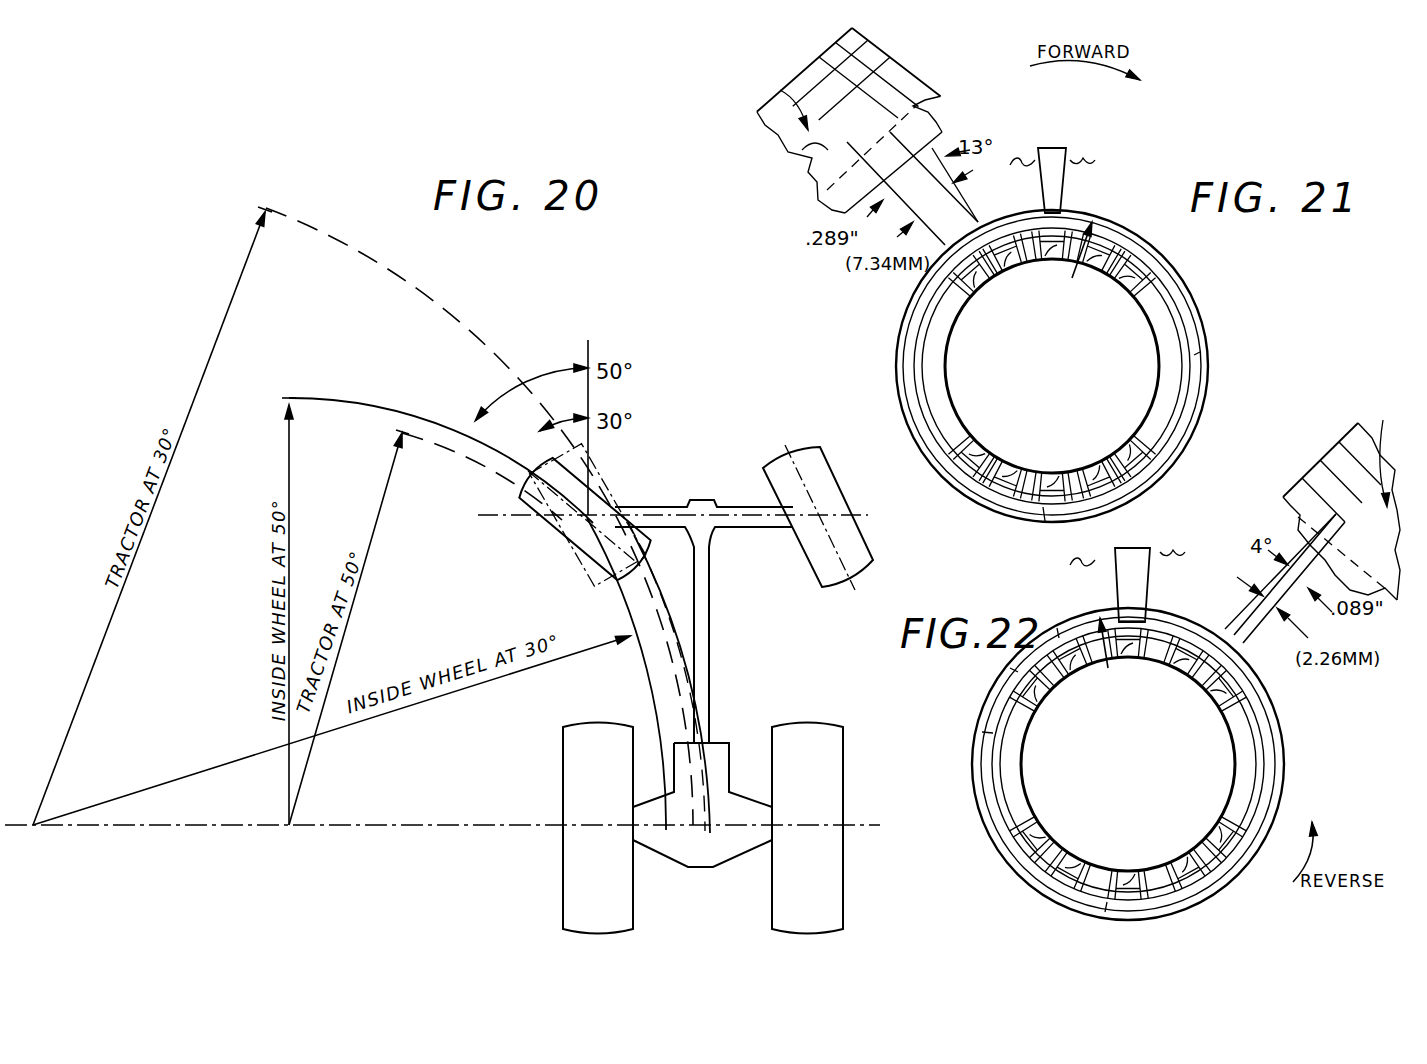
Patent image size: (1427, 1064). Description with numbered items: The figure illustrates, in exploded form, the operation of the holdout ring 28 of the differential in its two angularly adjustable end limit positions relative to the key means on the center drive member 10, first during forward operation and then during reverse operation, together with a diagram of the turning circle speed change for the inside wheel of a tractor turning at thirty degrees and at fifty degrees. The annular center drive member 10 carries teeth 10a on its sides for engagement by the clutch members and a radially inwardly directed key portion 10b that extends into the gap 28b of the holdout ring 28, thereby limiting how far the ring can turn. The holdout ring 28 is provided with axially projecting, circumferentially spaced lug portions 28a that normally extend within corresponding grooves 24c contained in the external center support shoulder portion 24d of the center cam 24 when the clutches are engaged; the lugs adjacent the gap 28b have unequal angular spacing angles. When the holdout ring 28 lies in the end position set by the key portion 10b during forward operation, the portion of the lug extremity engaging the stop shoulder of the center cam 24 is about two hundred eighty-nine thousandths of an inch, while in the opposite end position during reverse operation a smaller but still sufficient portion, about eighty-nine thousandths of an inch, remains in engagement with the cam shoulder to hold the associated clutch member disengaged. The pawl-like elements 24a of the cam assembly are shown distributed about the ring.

In FIG. 21, the center drive member 10 is at (1094, 172).
In FIG. 22, the center drive member 10 is at (1160, 548).
In FIG. 21, the teeth 10a is at (1058, 148).
In FIG. 21, the key portion 10b is at (1078, 212).
In FIG. 22, the key portion 10b is at (1145, 615).
In FIG. 21, the center cam 24 is at (800, 75).
In FIG. 22, the center cam 24 is at (1355, 433).
In FIG. 21, the pawls 24a is at (1003, 280).
In FIG. 22, the pawls 24a is at (1213, 688).
In FIG. 21, the grooves 24c is at (780, 90).
In FIG. 22, the grooves 24c is at (1378, 451).
In FIG. 22, the external center support shoulder portion 24d is at (1088, 612).
In FIG. 21, the holdout ring 28 is at (820, 200).
In FIG. 22, the holdout ring 28 is at (993, 826).
In FIG. 21, the lug portions 28a is at (798, 170).
In FIG. 22, the lug portions 28a is at (983, 712).
In FIG. 21, the gap 28b is at (1077, 265).
In FIG. 22, the gap 28b is at (1107, 659).